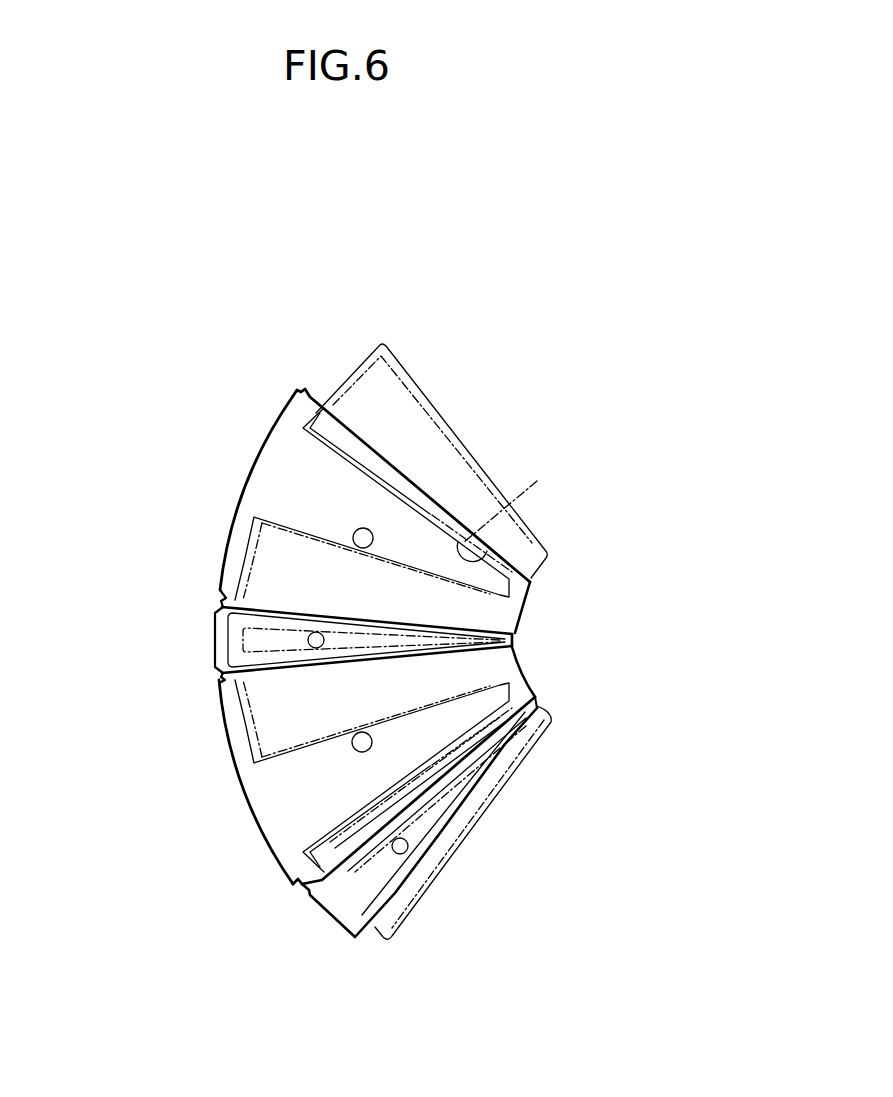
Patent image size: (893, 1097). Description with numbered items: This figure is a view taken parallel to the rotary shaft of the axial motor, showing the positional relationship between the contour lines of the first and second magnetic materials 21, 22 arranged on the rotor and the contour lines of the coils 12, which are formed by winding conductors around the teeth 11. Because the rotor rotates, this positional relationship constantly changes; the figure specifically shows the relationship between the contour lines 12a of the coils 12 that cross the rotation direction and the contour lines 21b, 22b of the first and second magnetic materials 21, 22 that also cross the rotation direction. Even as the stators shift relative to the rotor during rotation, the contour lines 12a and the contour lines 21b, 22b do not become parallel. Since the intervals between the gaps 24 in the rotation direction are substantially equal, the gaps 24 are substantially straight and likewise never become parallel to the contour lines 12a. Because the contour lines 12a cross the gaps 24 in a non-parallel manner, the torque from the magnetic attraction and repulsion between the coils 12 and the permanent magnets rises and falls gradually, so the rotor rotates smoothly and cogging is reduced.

The teeth 11 is at (368, 357).
The coils 12 is at (342, 383).
The contour lines 12a is at (522, 520).
The first magnetic material 21 is at (239, 515).
The contour lines 21b is at (318, 398).
The second magnetic material 22 is at (215, 648).
The contour lines 22b is at (215, 630).
The gaps 24 is at (217, 613).